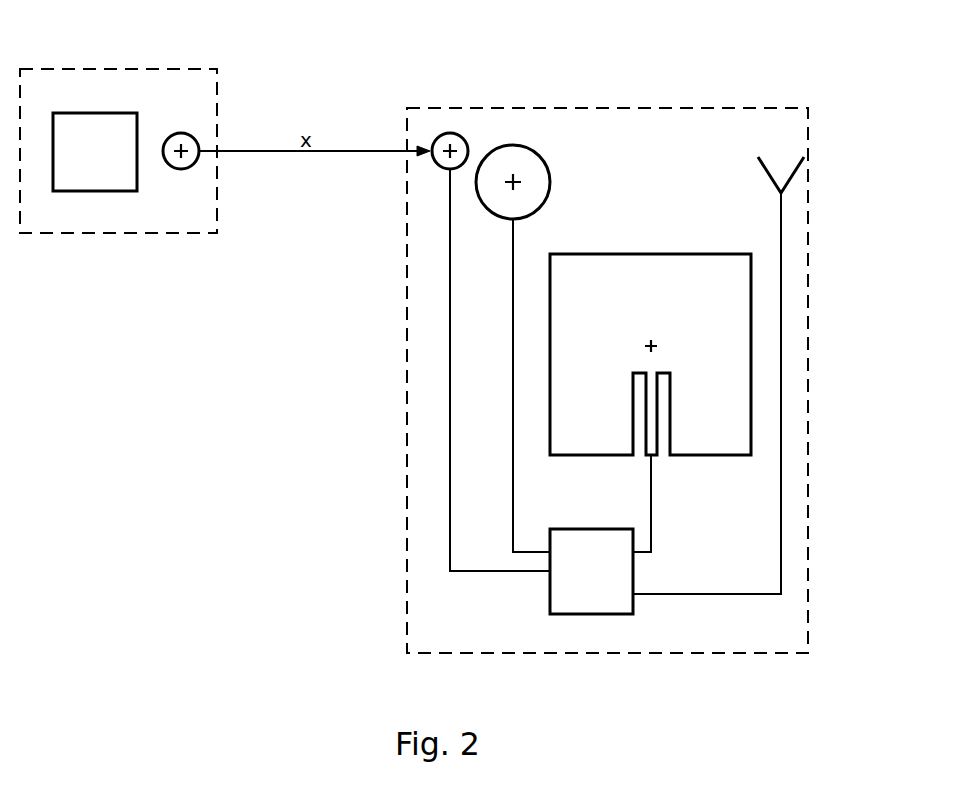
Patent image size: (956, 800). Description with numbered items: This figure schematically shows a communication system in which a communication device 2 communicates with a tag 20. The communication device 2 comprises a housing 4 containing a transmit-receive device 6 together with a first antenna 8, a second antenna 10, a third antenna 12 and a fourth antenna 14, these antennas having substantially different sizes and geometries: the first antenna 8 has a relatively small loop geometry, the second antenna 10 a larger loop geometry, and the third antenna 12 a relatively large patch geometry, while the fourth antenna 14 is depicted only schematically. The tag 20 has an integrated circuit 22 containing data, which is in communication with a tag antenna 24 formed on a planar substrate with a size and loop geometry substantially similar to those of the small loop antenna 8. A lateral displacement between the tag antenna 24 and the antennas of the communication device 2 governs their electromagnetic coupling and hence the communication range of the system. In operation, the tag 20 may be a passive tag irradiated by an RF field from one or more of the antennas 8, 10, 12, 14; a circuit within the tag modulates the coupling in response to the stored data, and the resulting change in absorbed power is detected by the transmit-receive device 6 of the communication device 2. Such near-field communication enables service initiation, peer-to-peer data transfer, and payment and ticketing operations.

The communication device 2 is at (425, 320).
The housing 4 is at (808, 416).
The transmit-receive device 6 is at (590, 598).
The first antenna 8 is at (448, 132).
The second antenna 10 is at (515, 145).
The third antenna 12 is at (650, 254).
The fourth antenna 14 is at (781, 170).
The tag 20 is at (95, 83).
The integrated circuit 22 is at (95, 168).
The antenna 24 is at (180, 133).